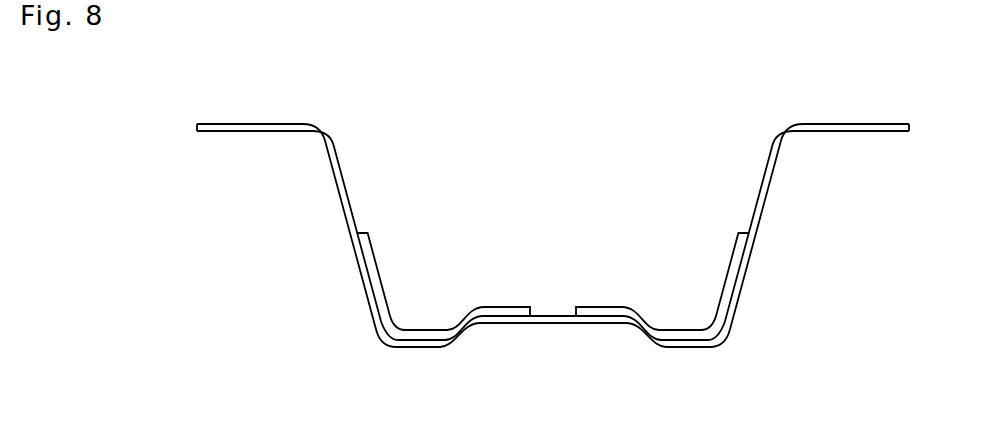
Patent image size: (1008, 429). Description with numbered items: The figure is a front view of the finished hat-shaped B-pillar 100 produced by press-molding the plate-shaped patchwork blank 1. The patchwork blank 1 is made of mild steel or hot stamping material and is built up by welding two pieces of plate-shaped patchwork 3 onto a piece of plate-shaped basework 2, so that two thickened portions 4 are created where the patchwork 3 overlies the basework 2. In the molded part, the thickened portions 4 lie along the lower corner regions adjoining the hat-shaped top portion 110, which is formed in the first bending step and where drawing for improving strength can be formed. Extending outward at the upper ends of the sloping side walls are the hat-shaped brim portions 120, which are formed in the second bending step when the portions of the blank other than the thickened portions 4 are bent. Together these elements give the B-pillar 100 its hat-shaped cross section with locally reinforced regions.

The patchwork blank 1 is at (580, 235).
The basework 2 is at (763, 193).
The patchwork 3 is at (553, 268).
The thickened portion 4 is at (727, 277).
The B-pillar 100 is at (547, 223).
The top portion 110 is at (543, 324).
The brim portion 120 is at (263, 131).